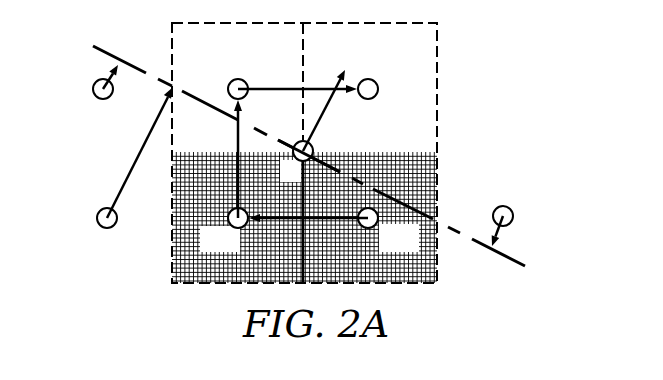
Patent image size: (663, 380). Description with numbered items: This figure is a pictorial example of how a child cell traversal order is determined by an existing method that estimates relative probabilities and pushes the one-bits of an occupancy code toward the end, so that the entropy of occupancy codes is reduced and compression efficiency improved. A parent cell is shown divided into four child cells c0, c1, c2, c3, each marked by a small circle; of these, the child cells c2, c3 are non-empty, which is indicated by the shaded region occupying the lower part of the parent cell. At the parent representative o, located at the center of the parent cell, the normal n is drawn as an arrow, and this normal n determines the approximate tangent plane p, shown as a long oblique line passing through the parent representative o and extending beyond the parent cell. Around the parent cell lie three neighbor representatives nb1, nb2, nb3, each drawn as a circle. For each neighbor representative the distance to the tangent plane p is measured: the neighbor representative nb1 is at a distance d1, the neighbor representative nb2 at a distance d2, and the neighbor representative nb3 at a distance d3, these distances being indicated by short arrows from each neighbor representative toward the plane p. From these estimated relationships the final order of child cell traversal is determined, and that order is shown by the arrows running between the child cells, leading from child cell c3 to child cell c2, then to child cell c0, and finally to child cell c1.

The approximate tangent plane p is at (309, 142).
The distance of neighbor representative nb1 to plane p d1 is at (126, 84).
The distance of neighbor representative nb2 to plane p d2 is at (154, 153).
The distance of neighbor representative nb3 to plane p d3 is at (513, 237).
The neighbor representative nb1 is at (112, 110).
The neighbor representative nb2 is at (112, 237).
The neighbor representative nb3 is at (485, 200).
The child cell c0 is at (221, 71).
The child cell c1 is at (326, 78).
The child cell c2 is at (227, 177).
The child cell c3 is at (331, 230).
The normal n is at (327, 97).
The parent representative o is at (309, 161).